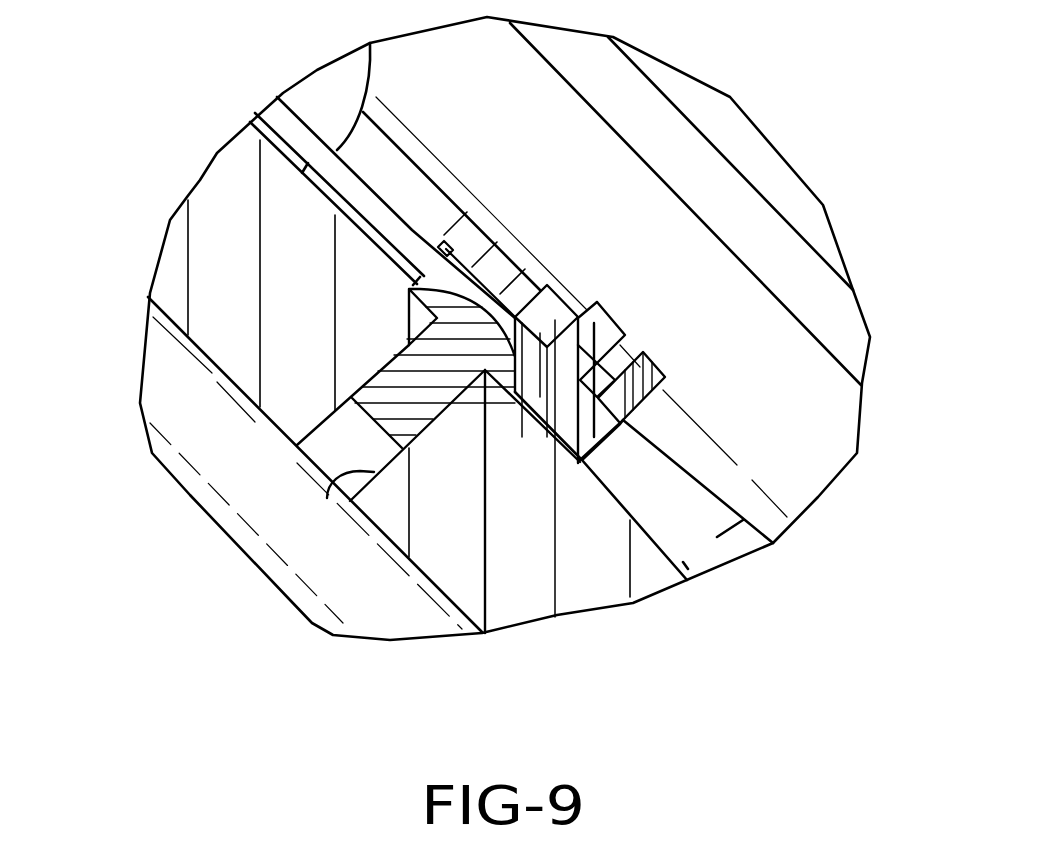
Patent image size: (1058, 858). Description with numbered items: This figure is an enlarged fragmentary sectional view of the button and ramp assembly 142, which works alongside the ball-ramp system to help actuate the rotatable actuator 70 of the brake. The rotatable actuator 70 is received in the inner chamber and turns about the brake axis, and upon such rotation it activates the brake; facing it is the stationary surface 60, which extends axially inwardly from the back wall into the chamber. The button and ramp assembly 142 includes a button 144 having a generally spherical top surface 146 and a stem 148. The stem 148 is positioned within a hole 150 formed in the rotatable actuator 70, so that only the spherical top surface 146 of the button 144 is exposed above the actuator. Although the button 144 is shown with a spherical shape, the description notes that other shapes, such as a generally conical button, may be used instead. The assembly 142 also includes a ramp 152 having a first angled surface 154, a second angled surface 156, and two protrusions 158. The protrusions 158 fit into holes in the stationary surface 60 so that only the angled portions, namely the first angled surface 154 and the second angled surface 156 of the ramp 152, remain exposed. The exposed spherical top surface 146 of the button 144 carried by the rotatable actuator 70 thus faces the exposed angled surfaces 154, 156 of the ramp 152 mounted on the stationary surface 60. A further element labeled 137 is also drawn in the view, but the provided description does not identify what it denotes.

The stationary actuator surface 60 is at (737, 507).
The rotatable actuator 70 is at (600, 577).
The rail strip 137 is at (589, 305).
The button and ramp assembly 142 is at (730, 407).
The button 144 is at (380, 370).
The spherical top surface 146 is at (445, 290).
The stem 148 is at (392, 403).
The hole 150 is at (327, 498).
The ramp 152 is at (620, 323).
The first angled surface 154 is at (505, 300).
The second angled surface 156 is at (547, 432).
The protrusions 158 is at (611, 305).